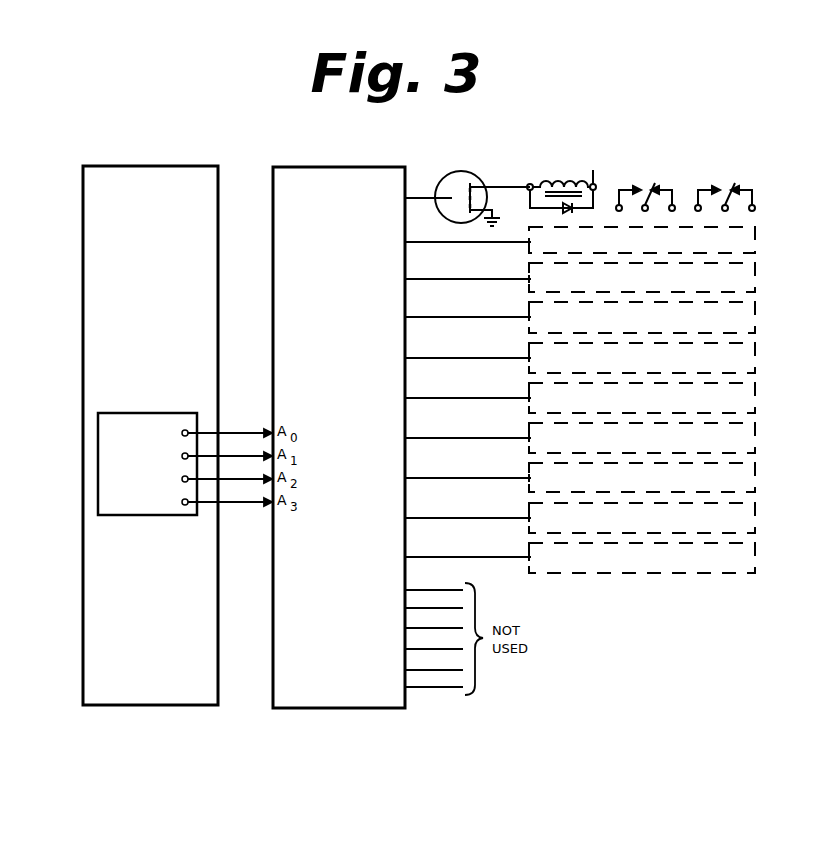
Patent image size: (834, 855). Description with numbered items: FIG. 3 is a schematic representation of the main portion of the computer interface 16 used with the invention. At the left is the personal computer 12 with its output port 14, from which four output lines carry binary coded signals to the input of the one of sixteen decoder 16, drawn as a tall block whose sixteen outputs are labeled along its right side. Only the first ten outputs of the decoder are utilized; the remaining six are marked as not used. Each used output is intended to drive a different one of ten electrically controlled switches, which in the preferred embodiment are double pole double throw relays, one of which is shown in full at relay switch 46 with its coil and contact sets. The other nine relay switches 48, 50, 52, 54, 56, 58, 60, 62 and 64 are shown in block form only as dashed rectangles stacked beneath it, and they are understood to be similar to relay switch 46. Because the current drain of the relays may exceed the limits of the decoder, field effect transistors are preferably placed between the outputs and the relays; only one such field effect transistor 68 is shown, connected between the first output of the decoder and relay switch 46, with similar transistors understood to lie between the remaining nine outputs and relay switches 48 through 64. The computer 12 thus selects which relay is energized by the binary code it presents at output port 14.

The personal computer 12 is at (158, 693).
The output port 14 is at (148, 500).
The interface 16 is at (320, 692).
The relay switch 46 is at (617, 176).
The relay switch 48 is at (745, 241).
The relay switch 50 is at (745, 281).
The relay switch 52 is at (745, 321).
The relay switch 54 is at (745, 362).
The relay switch 56 is at (745, 407).
The relay switch 58 is at (745, 447).
The relay switch 60 is at (745, 487).
The relay switch 62 is at (745, 527).
The relay switch 64 is at (745, 563).
The field effect transistor 68 is at (478, 187).